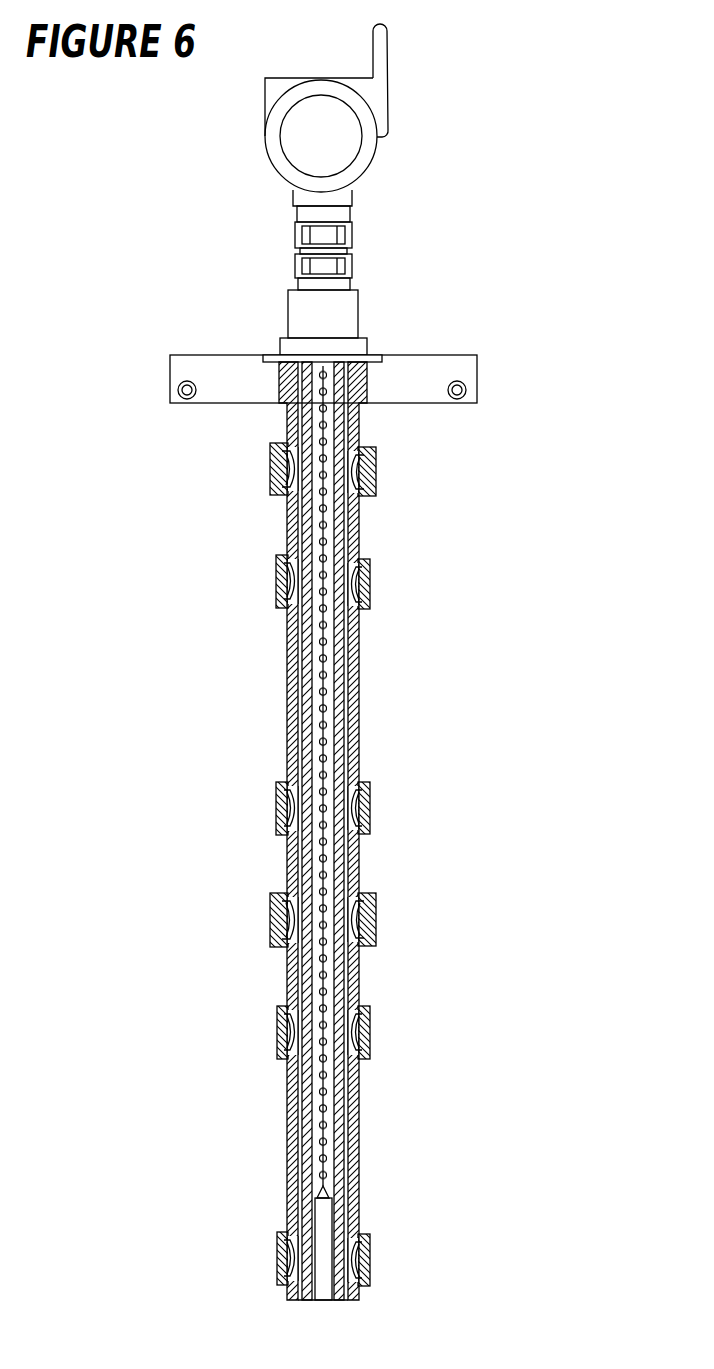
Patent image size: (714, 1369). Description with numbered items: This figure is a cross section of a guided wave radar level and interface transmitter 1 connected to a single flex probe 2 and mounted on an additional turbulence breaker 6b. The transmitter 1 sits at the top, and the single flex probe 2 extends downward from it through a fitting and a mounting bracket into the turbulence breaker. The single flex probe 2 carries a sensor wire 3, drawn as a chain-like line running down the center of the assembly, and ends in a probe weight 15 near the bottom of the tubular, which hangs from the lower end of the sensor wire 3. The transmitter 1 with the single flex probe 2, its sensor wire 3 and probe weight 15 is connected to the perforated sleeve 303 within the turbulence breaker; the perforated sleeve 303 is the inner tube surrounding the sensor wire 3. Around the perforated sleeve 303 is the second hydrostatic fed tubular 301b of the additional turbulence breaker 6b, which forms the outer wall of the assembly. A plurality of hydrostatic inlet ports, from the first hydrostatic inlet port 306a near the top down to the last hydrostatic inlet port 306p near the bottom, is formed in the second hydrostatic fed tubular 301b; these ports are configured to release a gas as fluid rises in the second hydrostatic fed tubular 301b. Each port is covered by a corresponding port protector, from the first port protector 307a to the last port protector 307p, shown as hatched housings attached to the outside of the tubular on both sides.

The guided wave radar level and interface transmitter 1 is at (265, 128).
The single flex probe 2 is at (352, 231).
The additional turbulence breaker 6b is at (169, 434).
The hydrostatic inlet port 306a is at (284, 453).
The port protector 307a is at (271, 469).
The second hydrostatic fed tubular 301b is at (288, 531).
The perforated sleeve 303 is at (345, 536).
The sensor wire 3 is at (326, 695).
The probe weight 15 is at (326, 1223).
The hydrostatic inlet port 306p is at (298, 1258).
The port protector 307p is at (280, 1272).